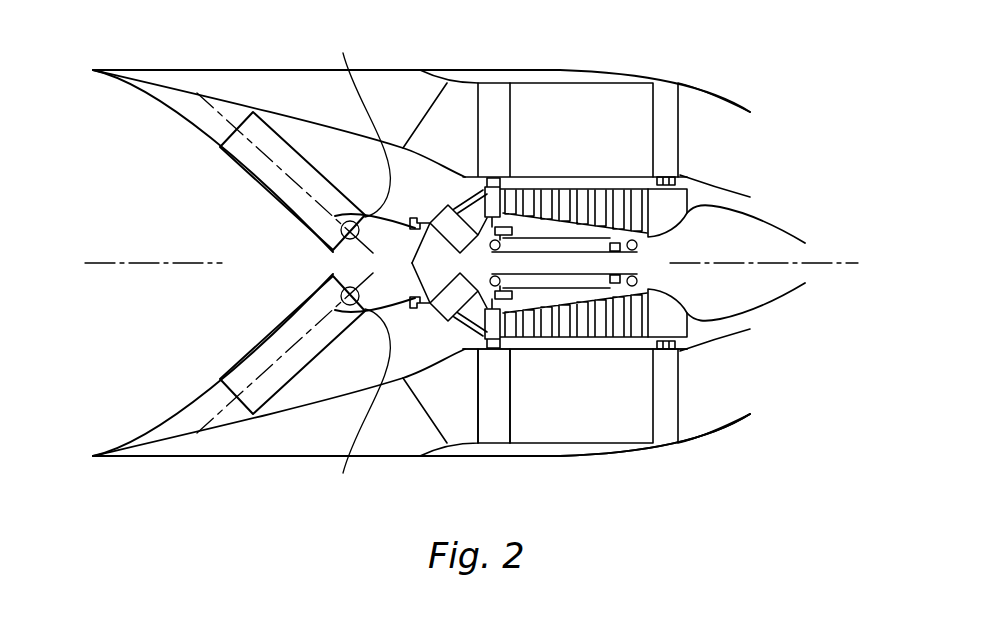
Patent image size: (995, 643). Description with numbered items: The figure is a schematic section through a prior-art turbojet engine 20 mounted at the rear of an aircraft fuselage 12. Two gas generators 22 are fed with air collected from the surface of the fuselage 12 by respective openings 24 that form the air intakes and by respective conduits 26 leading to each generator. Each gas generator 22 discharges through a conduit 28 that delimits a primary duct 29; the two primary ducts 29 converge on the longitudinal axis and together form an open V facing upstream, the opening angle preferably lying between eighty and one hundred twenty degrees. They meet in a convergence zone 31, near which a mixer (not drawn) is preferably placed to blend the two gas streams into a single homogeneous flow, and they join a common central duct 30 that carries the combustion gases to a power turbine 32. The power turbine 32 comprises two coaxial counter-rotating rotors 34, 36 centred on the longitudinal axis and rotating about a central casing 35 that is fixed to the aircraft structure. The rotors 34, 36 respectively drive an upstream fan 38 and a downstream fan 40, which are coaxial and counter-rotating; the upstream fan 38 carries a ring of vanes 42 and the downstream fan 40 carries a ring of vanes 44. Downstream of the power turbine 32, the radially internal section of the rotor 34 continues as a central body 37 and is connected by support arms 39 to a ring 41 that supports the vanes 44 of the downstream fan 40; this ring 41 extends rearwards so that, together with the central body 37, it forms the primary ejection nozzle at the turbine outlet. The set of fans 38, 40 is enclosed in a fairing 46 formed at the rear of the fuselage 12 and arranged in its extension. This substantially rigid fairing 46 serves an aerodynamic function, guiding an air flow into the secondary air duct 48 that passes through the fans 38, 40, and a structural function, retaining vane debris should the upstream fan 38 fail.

The fuselage 12 is at (95, 68).
The turbojet engine 20 is at (737, 68).
The gas generators 22 is at (270, 378).
The openings 24 is at (140, 456).
The conduits 26 is at (150, 437).
The conduits 28 is at (356, 283).
The primary ducts 29 is at (366, 265).
The central duct 30 is at (381, 266).
The convergence zone 31 is at (381, 262).
The power turbine 32 is at (614, 357).
The rotor 34 is at (512, 203).
The central casing 35 is at (550, 252).
The rotor 36 is at (617, 207).
The central body 37 is at (793, 232).
The upstream fan 38 is at (496, 114).
The support arms 39 is at (672, 203).
The downstream fan 40 is at (662, 148).
The ring 41 is at (598, 343).
The vanes 42 is at (496, 417).
The vanes 44 is at (668, 393).
The fairing 46 is at (648, 448).
The secondary air duct 48 is at (600, 133).